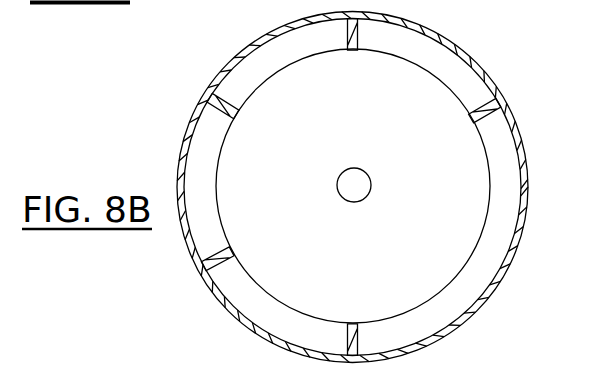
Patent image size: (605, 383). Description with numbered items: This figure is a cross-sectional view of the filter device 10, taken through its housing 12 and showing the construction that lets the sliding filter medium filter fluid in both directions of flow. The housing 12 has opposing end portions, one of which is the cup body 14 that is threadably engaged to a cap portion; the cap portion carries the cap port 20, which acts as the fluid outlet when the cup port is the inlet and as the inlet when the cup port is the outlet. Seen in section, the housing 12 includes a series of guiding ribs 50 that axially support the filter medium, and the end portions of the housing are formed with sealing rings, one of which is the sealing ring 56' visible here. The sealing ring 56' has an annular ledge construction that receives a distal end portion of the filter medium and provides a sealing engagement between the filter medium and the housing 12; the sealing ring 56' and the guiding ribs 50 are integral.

The filter device 10 is at (138, 118).
The housing 12 is at (392, 14).
The cup body 14 is at (524, 153).
The cap port 20 is at (339, 190).
The guiding ribs 50 is at (347, 338).
The sealing ring 56' is at (353, 186).